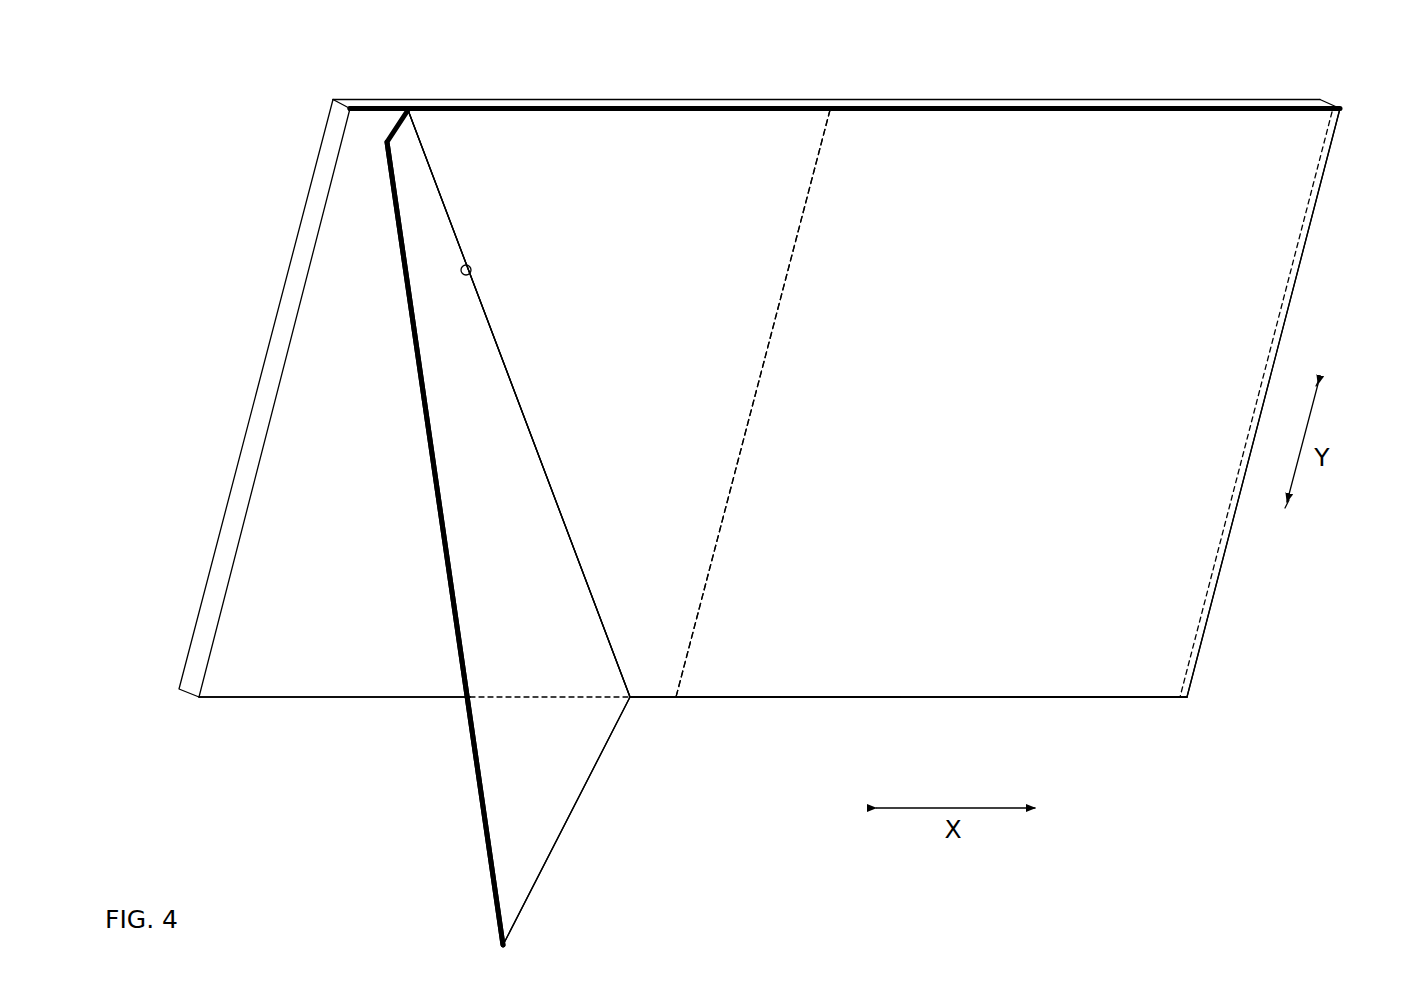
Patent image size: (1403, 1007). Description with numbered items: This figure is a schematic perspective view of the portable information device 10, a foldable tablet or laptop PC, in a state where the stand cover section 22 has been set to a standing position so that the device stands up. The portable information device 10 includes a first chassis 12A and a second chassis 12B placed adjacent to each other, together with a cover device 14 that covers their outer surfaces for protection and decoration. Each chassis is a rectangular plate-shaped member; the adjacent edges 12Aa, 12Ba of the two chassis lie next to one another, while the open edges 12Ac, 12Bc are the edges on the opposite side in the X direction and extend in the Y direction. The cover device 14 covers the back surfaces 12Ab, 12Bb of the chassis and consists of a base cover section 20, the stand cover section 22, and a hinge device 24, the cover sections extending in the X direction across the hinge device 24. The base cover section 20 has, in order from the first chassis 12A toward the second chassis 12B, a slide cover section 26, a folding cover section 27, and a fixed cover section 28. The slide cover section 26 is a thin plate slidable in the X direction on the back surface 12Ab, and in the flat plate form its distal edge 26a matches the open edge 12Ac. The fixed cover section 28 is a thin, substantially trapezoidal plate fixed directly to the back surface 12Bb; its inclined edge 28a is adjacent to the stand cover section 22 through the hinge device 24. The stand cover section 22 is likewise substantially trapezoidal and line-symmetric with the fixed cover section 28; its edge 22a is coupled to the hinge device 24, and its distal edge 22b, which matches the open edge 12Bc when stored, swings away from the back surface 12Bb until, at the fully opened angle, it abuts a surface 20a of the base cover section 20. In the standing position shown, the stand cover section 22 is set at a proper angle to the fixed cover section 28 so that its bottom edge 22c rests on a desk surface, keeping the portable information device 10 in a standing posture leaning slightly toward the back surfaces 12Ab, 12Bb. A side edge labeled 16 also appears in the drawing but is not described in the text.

The portable information device 10 is at (175, 77).
The first chassis 12A is at (1105, 99).
The second chassis 12B is at (585, 99).
The adjacent edge 12Aa is at (768, 330).
The back surface 12Ab is at (1088, 668).
The open edge 12Ac is at (1326, 103).
The adjacent edge 12Ba is at (786, 288).
The back surface 12Bb is at (267, 668).
The open edge 12Bc is at (330, 149).
The cover device 14 is at (750, 669).
The side edge 16 is at (300, 236).
The base cover section 20 is at (937, 140).
The surface of the base cover section 20a is at (835, 665).
The stand cover section 22 is at (475, 772).
The edge 22a is at (519, 403).
The distal edge 22b is at (489, 868).
The bottom edge 22c is at (549, 862).
The hinge device 24 is at (532, 430).
The slide cover section 26 is at (925, 677).
The distal edge 26a is at (1297, 277).
The folding cover section 27 is at (795, 138).
The fixed cover section 28 is at (500, 136).
The edge 28a is at (471, 271).